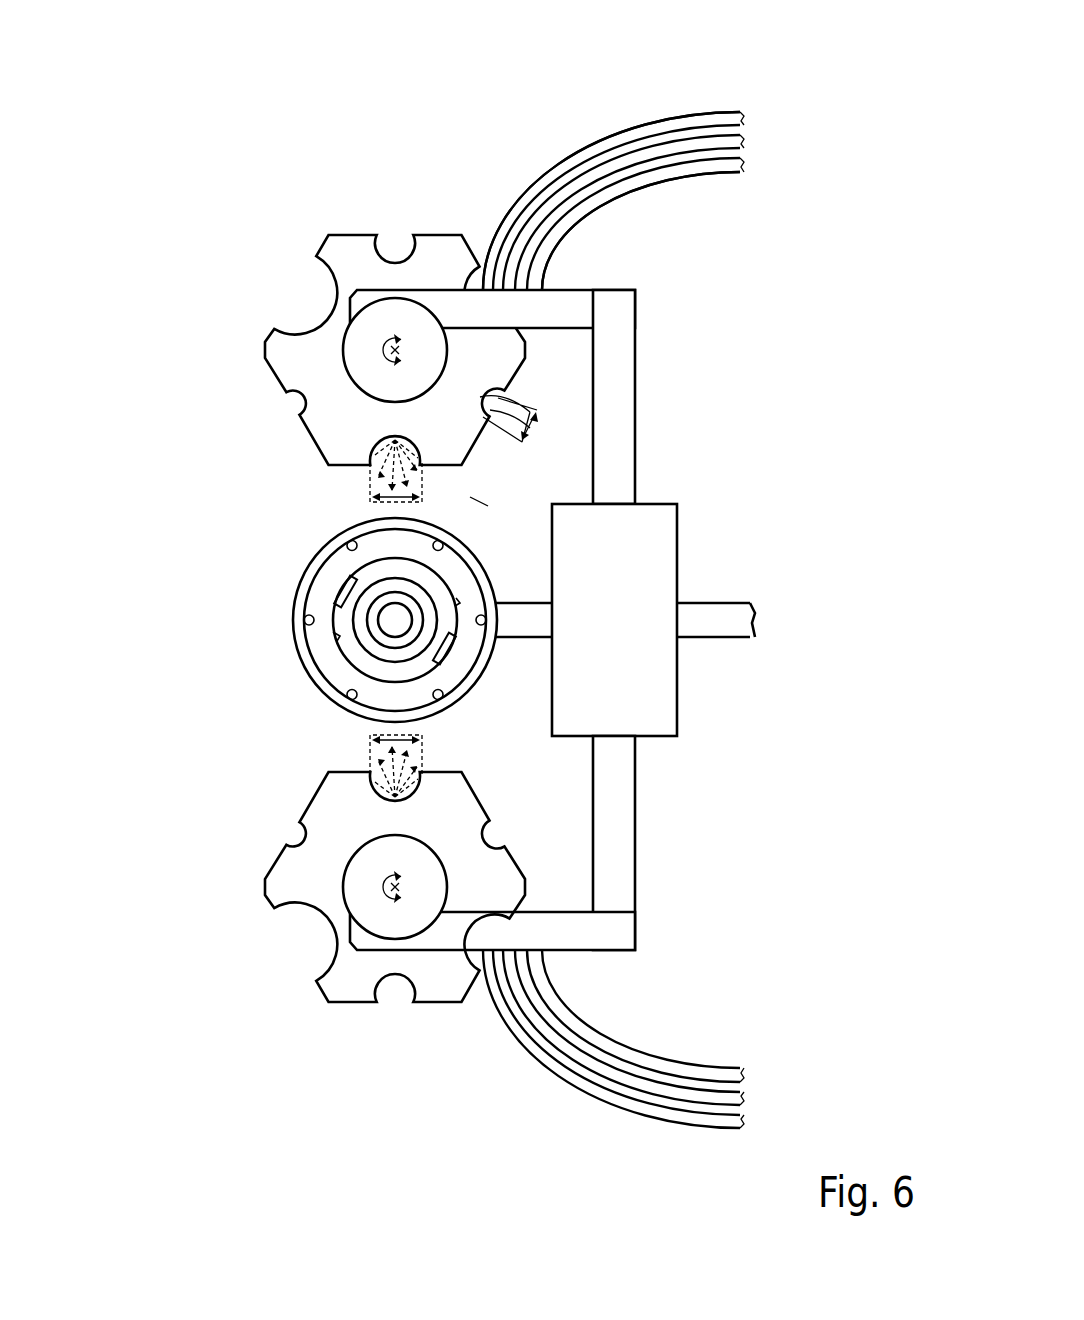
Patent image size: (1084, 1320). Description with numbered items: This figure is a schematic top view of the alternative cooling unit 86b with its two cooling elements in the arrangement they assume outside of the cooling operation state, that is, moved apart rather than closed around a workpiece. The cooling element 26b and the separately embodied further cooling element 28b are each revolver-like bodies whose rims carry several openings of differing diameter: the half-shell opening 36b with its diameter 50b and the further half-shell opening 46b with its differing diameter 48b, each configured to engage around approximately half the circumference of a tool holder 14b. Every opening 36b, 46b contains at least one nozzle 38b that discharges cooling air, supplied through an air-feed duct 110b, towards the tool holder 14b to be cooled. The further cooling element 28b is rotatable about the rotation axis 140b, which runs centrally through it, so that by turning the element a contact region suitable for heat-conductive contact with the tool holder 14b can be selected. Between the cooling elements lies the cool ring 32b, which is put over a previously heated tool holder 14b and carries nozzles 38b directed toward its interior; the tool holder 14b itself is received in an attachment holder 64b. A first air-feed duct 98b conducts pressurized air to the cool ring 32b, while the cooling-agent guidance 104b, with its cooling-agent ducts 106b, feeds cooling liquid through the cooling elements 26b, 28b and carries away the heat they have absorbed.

The tool holder 14b is at (382, 634).
The cooling element 26b is at (307, 880).
The further cooling element 28b is at (302, 358).
The cool ring 32b is at (336, 728).
The opening 36b is at (373, 483).
The nozzle 38b is at (397, 438).
The further half-shell opening 46b is at (537, 410).
The diameter of the further opening 48b is at (530, 427).
The diameter of the opening 50b is at (425, 520).
The attachment holder 64b is at (395, 668).
The cooling unit 86b is at (452, 574).
The first air-feed duct 98b is at (533, 618).
The cooling-agent guidance 104b is at (519, 128).
The cooling-agent ducts 106b is at (595, 148).
The air-feed duct 110b is at (688, 141).
The rotation axis 140b is at (400, 352).